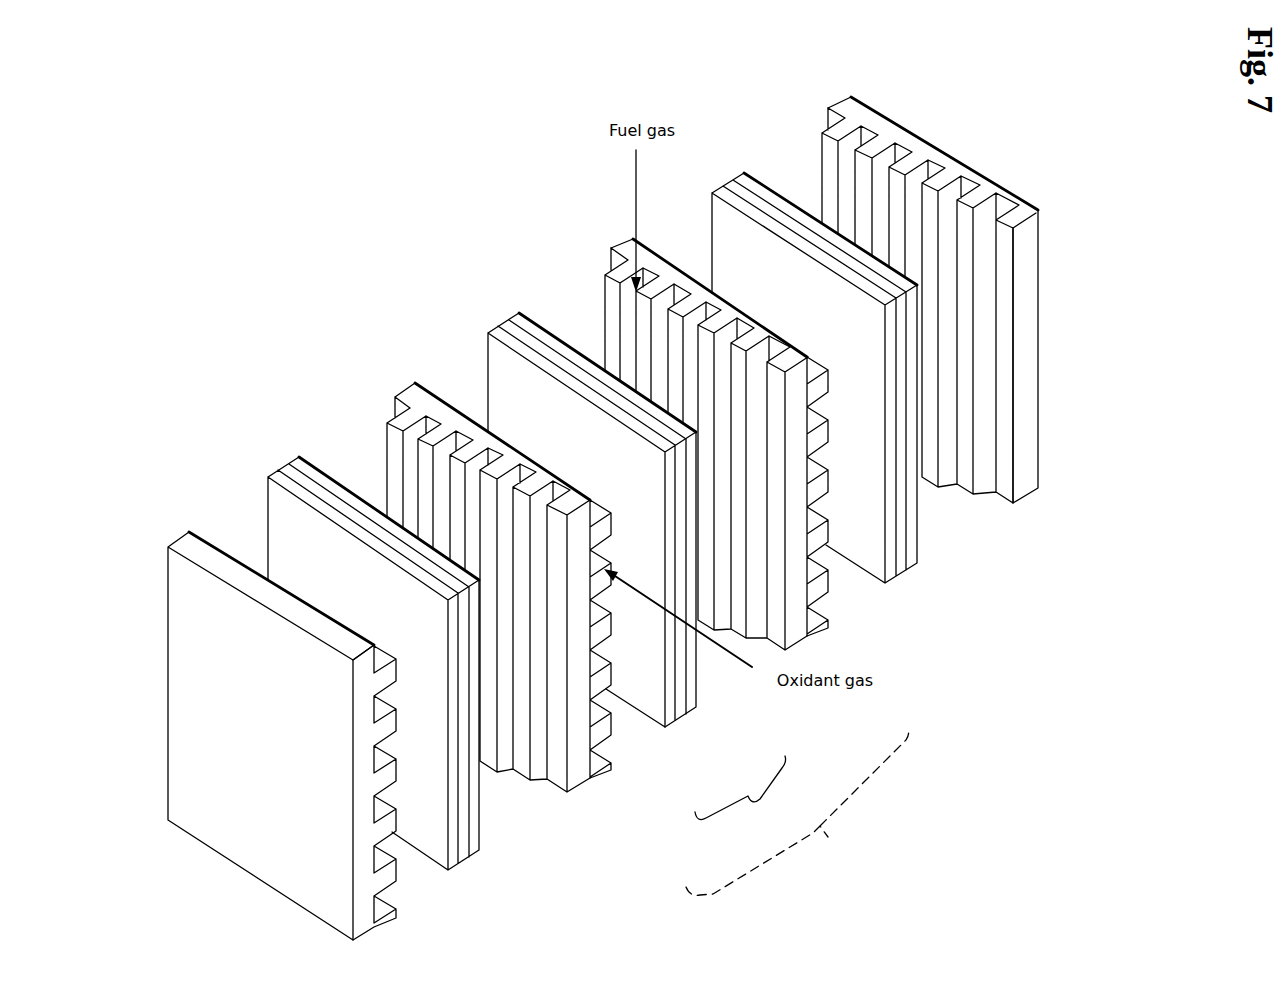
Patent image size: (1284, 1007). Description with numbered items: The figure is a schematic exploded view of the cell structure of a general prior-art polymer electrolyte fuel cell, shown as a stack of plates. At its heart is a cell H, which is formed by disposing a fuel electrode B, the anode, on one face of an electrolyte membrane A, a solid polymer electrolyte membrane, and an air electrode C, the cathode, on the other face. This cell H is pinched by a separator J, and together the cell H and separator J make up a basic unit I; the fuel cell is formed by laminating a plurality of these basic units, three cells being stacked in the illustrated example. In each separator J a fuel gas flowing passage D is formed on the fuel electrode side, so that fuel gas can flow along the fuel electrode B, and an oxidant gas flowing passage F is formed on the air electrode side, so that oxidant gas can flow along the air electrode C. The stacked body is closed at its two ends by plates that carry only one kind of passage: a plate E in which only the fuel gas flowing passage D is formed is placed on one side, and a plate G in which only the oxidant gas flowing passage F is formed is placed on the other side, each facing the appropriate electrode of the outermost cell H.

The electrolyte membrane A is at (680, 700).
The fuel electrode B is at (690, 698).
The air electrode C is at (652, 722).
The fuel gas flowing passage D is at (718, 624).
The plate E is at (1023, 490).
The oxidant gas flowing passage F is at (398, 846).
The plate G is at (187, 541).
The cell H is at (740, 792).
The basic unit I is at (797, 811).
The separator J is at (578, 777).